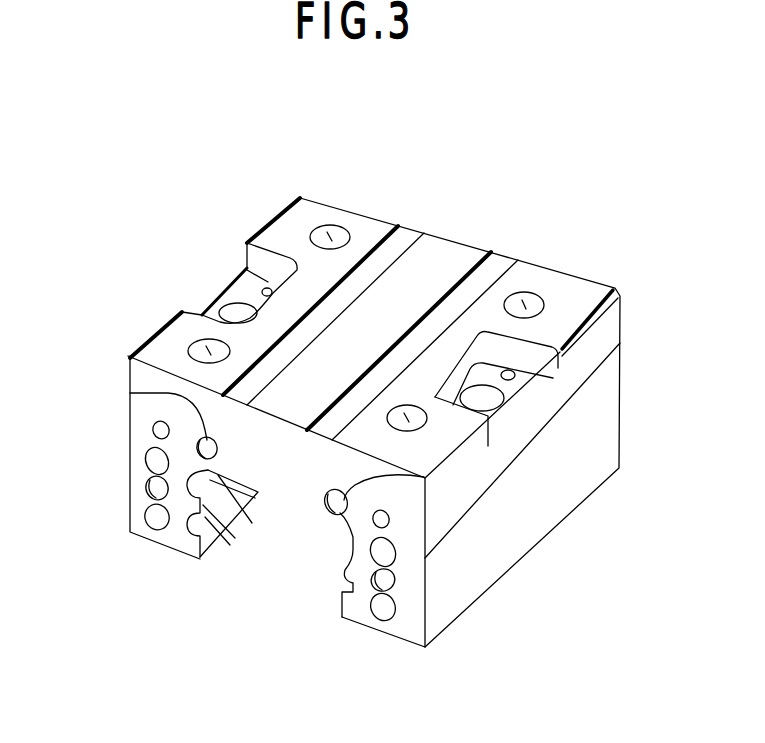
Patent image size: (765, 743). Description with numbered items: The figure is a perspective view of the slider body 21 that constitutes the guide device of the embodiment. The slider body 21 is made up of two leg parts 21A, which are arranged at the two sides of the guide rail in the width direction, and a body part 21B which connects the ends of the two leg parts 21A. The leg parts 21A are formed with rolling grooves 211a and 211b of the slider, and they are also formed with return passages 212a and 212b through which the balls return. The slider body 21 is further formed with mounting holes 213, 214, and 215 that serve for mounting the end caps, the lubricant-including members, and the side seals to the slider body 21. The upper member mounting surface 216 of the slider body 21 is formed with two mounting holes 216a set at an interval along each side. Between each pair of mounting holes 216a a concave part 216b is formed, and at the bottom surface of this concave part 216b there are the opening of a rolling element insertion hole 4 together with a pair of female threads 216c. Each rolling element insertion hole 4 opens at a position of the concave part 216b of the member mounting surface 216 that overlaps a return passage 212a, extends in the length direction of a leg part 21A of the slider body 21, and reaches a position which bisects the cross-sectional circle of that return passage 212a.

The slider body 21 is at (160, 324).
The leg part 21A is at (136, 516).
The body part 21B is at (294, 470).
The rolling groove 211a is at (233, 527).
The rolling groove 211b is at (213, 548).
The return passage 212a is at (150, 460).
The return passage 212b is at (148, 516).
The mounting hole 213 is at (148, 488).
The mounting hole 214 is at (153, 425).
The mounting hole 215 is at (196, 447).
The member mounting surface 216 is at (295, 232).
The mounting hole 216a is at (330, 236).
The concave part 216b is at (205, 313).
The female thread 216c is at (262, 290).
The rolling element insertion hole 4 is at (210, 313).